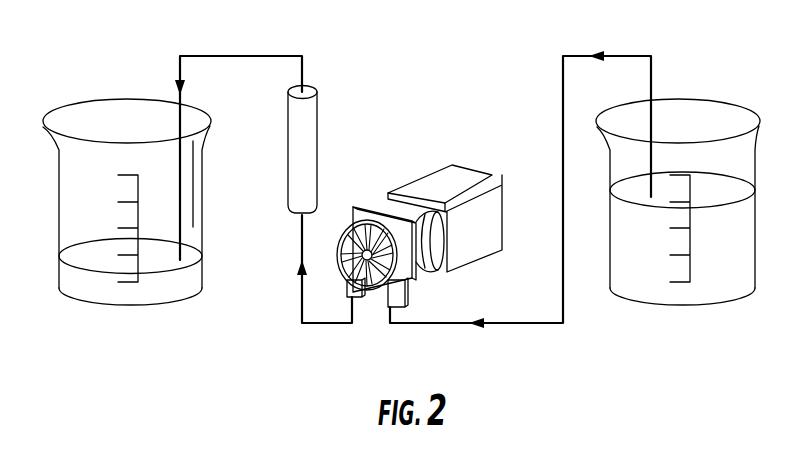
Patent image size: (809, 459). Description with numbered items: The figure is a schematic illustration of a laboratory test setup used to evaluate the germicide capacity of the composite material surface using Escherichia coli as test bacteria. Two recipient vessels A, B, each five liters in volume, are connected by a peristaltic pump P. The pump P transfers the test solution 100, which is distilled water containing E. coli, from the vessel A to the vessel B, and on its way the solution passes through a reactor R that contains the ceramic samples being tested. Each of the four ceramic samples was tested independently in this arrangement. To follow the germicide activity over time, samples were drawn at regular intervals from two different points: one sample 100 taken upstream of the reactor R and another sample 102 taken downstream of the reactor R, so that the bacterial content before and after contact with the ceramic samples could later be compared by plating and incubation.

The test solution 100 is at (725, 285).
The downstream sample 102 is at (78, 285).
The vessel A is at (692, 310).
The vessel B is at (177, 300).
The reactor R is at (306, 90).
The peristaltic pump P is at (445, 186).